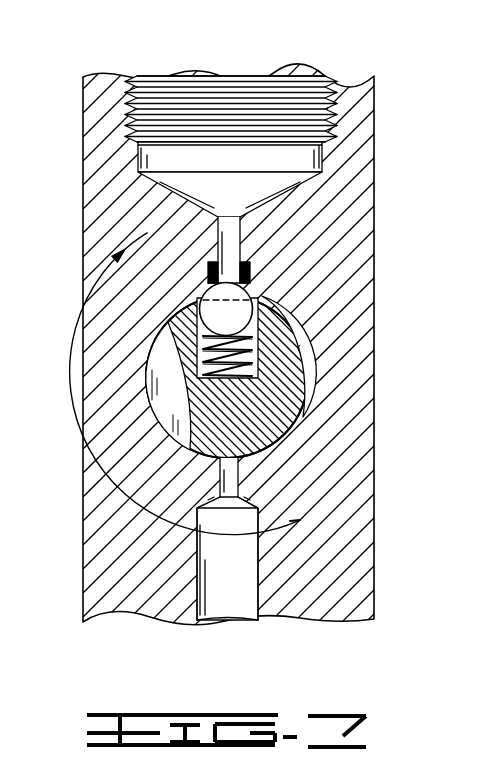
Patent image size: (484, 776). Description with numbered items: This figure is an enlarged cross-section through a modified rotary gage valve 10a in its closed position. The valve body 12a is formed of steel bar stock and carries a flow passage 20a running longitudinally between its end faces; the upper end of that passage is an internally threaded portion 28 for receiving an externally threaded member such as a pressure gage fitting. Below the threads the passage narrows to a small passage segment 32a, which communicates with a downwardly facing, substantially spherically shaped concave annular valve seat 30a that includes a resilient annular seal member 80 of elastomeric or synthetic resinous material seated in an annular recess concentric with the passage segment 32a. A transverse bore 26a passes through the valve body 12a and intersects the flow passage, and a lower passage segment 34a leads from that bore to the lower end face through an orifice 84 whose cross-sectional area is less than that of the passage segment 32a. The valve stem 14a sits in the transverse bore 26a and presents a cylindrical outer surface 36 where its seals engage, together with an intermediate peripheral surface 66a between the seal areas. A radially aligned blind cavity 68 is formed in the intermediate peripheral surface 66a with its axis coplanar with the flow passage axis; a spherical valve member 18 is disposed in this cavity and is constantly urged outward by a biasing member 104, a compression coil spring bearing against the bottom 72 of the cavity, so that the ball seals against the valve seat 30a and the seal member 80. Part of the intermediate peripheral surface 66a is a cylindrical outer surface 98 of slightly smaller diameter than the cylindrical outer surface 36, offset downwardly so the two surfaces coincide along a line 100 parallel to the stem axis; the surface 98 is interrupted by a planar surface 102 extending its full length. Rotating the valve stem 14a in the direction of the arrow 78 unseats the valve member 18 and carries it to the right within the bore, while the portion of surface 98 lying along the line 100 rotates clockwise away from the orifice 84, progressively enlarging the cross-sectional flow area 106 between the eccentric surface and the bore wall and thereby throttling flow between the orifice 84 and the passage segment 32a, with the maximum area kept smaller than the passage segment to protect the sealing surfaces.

The rotary gage valve 10a is at (242, 388).
The valve body 12a is at (372, 272).
The valve stem 14a is at (340, 422).
The spherical valve member 18 is at (200, 297).
The flow passage 20a is at (206, 592).
The transverse bore 26a is at (296, 352).
The internally threaded portion 28 is at (137, 128).
The valve seat 30a is at (262, 262).
The passage segment 32a is at (218, 240).
The lower passage segment 34a is at (200, 553).
The cylindrical outer surface 36 is at (300, 397).
The intermediate peripheral surface 66a is at (300, 300).
The cavity 68 is at (200, 345).
The bottom of the cavity 72 is at (162, 430).
The arrow 78 is at (66, 369).
The resilient annular seal member 80 is at (250, 266).
The orifice 84 is at (220, 488).
The cylindrical outer surface 98 is at (300, 370).
The line 100 is at (300, 521).
The planar surface 102 is at (182, 410).
The biasing member 104 is at (165, 362).
The cross-sectional flow area 106 is at (305, 345).